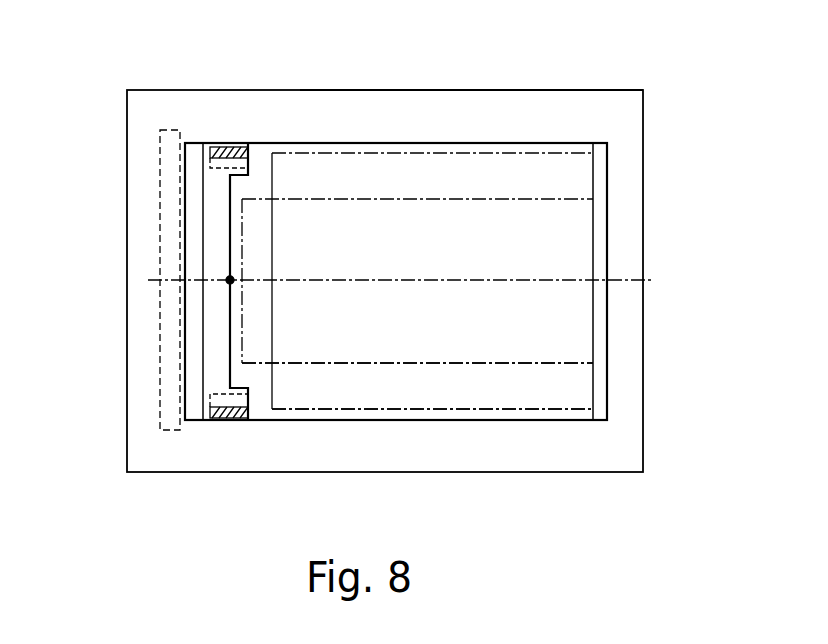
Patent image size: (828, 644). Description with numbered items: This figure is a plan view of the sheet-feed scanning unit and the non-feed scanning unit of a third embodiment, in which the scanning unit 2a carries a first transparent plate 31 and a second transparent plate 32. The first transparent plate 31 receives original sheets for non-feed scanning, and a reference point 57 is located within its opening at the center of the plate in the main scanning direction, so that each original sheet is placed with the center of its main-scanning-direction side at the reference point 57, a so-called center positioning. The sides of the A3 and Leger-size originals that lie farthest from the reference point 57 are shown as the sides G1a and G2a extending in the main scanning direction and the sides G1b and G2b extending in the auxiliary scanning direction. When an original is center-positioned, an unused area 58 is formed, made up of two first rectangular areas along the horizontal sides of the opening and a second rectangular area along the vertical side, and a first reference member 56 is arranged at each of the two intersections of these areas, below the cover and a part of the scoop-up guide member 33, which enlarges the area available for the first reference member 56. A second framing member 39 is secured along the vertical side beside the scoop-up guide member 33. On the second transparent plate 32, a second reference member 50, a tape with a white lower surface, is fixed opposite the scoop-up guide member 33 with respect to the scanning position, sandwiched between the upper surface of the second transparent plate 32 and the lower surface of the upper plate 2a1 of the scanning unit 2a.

The scanning unit 2a is at (589, 90).
The upper plate 2a1 is at (493, 125).
The first transparent plate 31 is at (572, 262).
The second transparent plate 32 is at (195, 328).
The scoop-up guide member 33 is at (197, 202).
The second framing member 39 is at (598, 177).
The second reference member 50 is at (168, 398).
The first reference member 56 is at (226, 420).
The reference point 57 is at (229, 278).
The unused area 58 is at (253, 192).
The side of the A3 original sheet extending in the main scanning direction G1a is at (262, 306).
The side of the Leger-size original sheet extending in the main scanning direction G2a is at (242, 230).
The side of the A3 original sheet extending in the auxiliary scanning direction G1b is at (458, 410).
The side of the Leger-size original sheet extending in the auxiliary scanning direct G2b is at (512, 363).